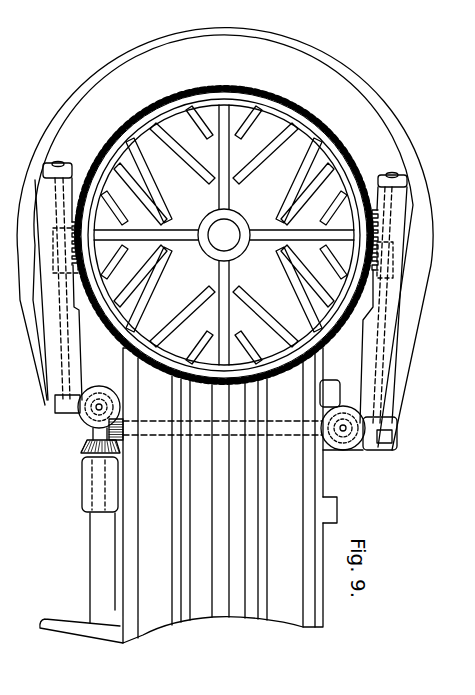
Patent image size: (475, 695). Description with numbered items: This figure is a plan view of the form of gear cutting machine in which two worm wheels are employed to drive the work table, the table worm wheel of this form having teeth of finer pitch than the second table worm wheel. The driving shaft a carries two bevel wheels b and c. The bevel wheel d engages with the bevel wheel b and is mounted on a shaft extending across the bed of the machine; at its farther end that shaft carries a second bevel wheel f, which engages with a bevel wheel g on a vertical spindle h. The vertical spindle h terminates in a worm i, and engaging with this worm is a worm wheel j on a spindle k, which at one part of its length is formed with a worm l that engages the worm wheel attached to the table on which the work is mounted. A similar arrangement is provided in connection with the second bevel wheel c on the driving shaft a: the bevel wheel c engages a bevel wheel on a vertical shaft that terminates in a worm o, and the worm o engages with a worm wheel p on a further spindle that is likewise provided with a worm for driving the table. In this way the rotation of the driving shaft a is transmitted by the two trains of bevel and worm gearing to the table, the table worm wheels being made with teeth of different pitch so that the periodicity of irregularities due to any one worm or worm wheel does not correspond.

The driving shaft a is at (95, 557).
The bevel wheel b is at (82, 447).
The bevel wheel c is at (237, 435).
The bevel wheel d is at (125, 440).
The second bevel wheel f is at (320, 445).
The bevel wheel g is at (333, 455).
The vertical spindle h is at (68, 357).
The worm i is at (343, 452).
The worm wheel j is at (373, 443).
The spindle k is at (215, 235).
The worm l is at (72, 260).
The worm o is at (98, 416).
The worm wheel p is at (68, 408).